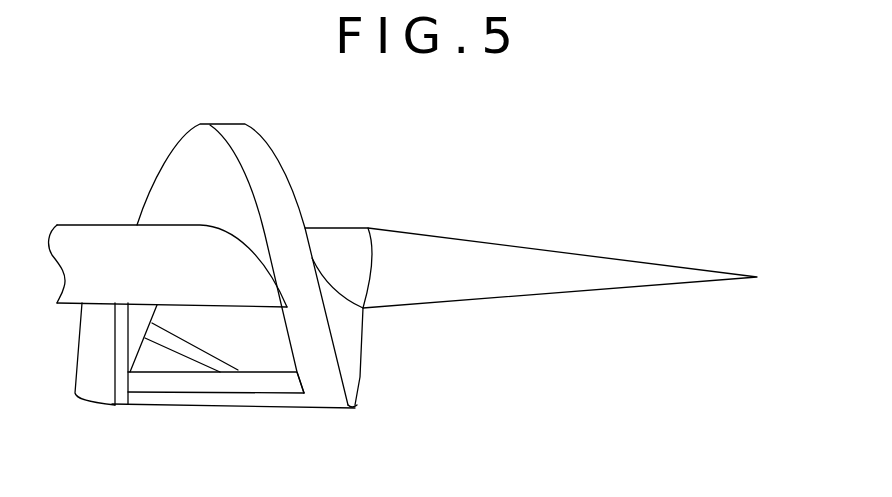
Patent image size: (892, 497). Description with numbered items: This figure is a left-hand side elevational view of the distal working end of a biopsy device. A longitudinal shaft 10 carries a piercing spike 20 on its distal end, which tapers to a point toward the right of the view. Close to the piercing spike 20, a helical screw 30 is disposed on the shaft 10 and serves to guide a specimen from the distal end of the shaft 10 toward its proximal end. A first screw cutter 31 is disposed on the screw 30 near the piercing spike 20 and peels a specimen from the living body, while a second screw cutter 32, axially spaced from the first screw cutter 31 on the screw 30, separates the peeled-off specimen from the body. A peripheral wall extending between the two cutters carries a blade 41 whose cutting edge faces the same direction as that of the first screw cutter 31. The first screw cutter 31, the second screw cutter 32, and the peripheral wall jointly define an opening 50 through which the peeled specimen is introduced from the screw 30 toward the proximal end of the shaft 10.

The shaft 10 is at (70, 224).
The piercing spike 20 is at (610, 259).
The helical screw 30 is at (231, 125).
The first screw cutter 31 is at (364, 376).
The second screw cutter 32 is at (110, 390).
The blade 41 is at (187, 343).
The opening 50 is at (242, 350).